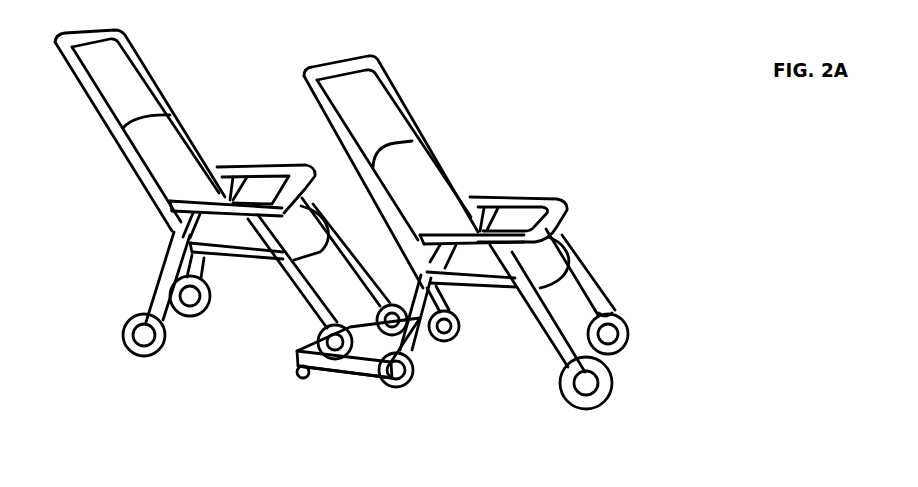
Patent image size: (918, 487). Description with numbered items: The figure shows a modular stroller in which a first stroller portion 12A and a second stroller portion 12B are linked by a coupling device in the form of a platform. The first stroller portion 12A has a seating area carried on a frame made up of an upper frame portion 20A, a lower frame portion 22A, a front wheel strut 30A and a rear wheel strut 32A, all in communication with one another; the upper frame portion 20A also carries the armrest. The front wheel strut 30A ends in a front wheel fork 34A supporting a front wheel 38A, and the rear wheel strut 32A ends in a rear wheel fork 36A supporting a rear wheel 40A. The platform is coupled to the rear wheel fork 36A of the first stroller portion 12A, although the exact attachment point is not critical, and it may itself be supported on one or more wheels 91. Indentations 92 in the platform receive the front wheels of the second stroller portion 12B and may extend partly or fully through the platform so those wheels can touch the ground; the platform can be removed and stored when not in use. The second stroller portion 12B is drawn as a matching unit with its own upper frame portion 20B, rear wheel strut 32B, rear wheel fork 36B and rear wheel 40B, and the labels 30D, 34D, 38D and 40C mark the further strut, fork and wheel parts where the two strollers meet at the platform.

The first stroller portion 12A is at (439, 100).
The second stroller portion 12B is at (186, 81).
The upper frame portion 20A is at (393, 75).
The back frame B 20B is at (144, 52).
The lower frame portion 22A is at (496, 284).
The front wheel strut 30A is at (591, 270).
The rear leg B 30D is at (290, 283).
The rear wheel strut 32A is at (426, 300).
The front leg B 32B is at (168, 262).
The front wheel fork 34A is at (608, 300).
The rear wheel B 34D is at (313, 328).
The rear wheel fork 36A is at (414, 343).
The rear wheel B 36B is at (161, 312).
The front wheel 38A is at (634, 332).
The connecting platform 38D is at (303, 353).
The rear wheel 40A is at (394, 393).
The front wheel B 40B is at (124, 349).
The caster wheel 40C is at (404, 340).
The wheels 91 is at (296, 383).
The indentations 92 is at (362, 370).